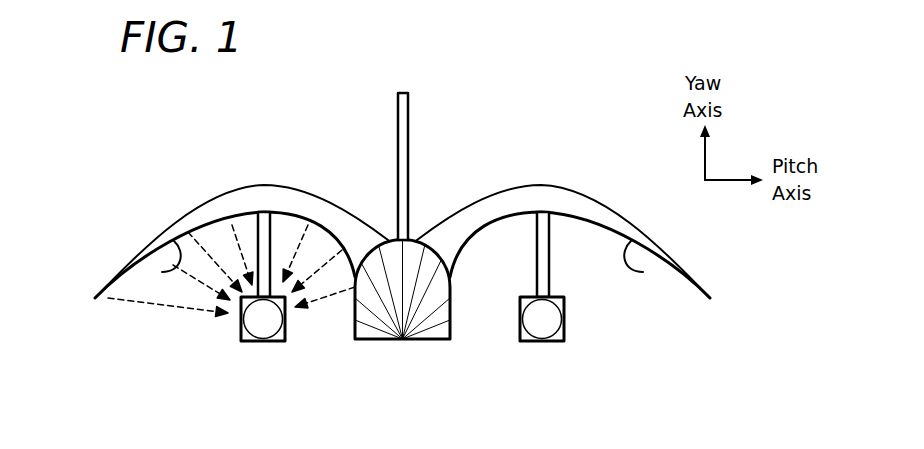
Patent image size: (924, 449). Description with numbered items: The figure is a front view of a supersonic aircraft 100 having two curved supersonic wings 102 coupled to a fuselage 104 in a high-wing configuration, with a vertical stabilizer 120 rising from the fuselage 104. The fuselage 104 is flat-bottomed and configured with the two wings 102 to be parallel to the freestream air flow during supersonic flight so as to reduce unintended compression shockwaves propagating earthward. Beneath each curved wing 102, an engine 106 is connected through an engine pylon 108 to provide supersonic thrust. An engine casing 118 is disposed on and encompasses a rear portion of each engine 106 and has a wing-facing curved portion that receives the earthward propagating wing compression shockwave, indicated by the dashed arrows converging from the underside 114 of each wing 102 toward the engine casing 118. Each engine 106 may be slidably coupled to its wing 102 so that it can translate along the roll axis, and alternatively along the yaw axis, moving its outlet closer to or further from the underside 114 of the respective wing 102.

The supersonic aircraft 100 is at (107, 141).
The curved supersonic wing 102 is at (235, 188).
The fuselage 104 is at (373, 340).
The engine 106 is at (230, 338).
The engine pylon 108 is at (272, 236).
The underside of wing 114 is at (162, 272).
The engine casing 118 is at (258, 341).
The vertical stabilizer 120 is at (397, 103).